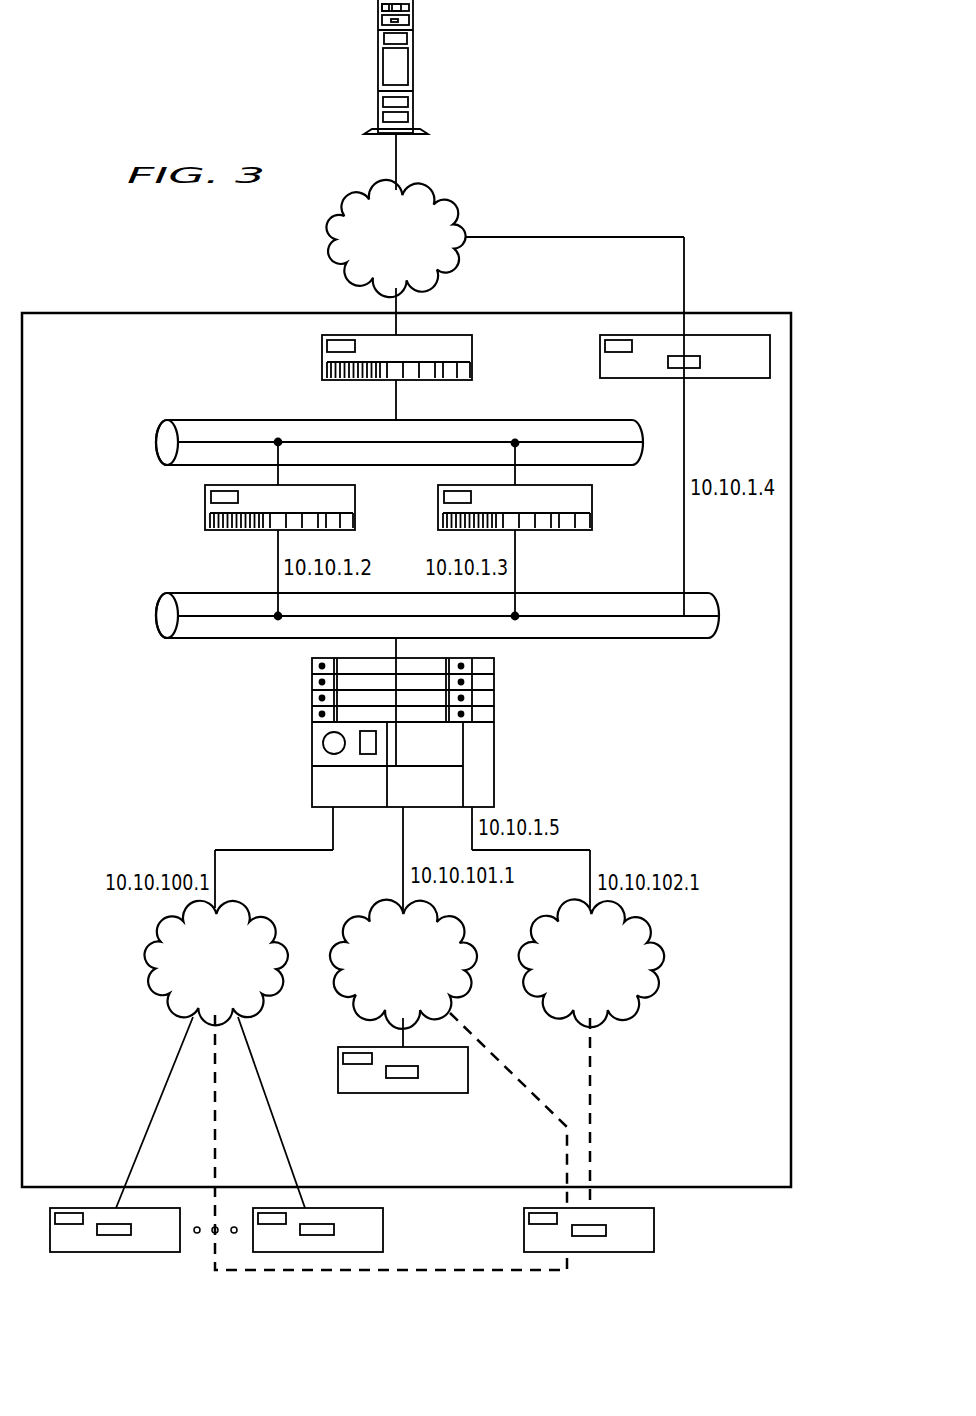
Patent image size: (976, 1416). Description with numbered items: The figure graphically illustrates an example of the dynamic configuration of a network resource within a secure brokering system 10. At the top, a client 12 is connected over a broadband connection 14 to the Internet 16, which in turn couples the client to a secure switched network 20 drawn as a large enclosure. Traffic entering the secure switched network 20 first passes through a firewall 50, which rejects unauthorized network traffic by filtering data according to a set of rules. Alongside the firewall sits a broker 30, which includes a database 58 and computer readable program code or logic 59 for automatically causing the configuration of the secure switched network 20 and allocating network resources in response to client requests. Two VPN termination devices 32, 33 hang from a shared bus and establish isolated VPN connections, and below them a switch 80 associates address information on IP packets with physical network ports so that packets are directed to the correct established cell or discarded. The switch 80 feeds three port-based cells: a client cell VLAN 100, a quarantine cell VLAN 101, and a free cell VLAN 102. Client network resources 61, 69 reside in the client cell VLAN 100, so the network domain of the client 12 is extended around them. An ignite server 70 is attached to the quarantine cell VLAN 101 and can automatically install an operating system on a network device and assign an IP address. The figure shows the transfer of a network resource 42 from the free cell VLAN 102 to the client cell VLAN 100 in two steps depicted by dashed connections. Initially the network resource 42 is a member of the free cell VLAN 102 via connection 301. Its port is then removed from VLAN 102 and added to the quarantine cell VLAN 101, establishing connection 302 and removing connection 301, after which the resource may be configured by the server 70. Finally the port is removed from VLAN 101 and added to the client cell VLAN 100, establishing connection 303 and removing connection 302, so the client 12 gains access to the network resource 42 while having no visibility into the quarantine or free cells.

The secure brokering system 10 is at (588, 147).
The client 12 is at (378, 68).
The broadband connection 14 is at (395, 165).
The Internet 16 is at (322, 238).
The secure switched network 20 is at (150, 312).
The broker 30 is at (600, 358).
The VPN termination device 32 is at (205, 507).
The VPN termination device 33 is at (592, 507).
The network resource 42 is at (589, 1252).
The firewall 50 is at (322, 352).
The database 58 is at (604, 345).
The computer readable program code or logic 59 is at (700, 362).
The client network resource 61 is at (116, 1252).
The client network resource 69 is at (302, 1252).
The ignite server 70 is at (403, 1093).
The switch 80 is at (312, 735).
The VLAN 100 is at (142, 978).
The VLAN 101 is at (372, 900).
The VLAN 102 is at (665, 980).
The connection 301 is at (592, 1110).
The connection 302 is at (526, 1080).
The connection 303 is at (425, 1272).